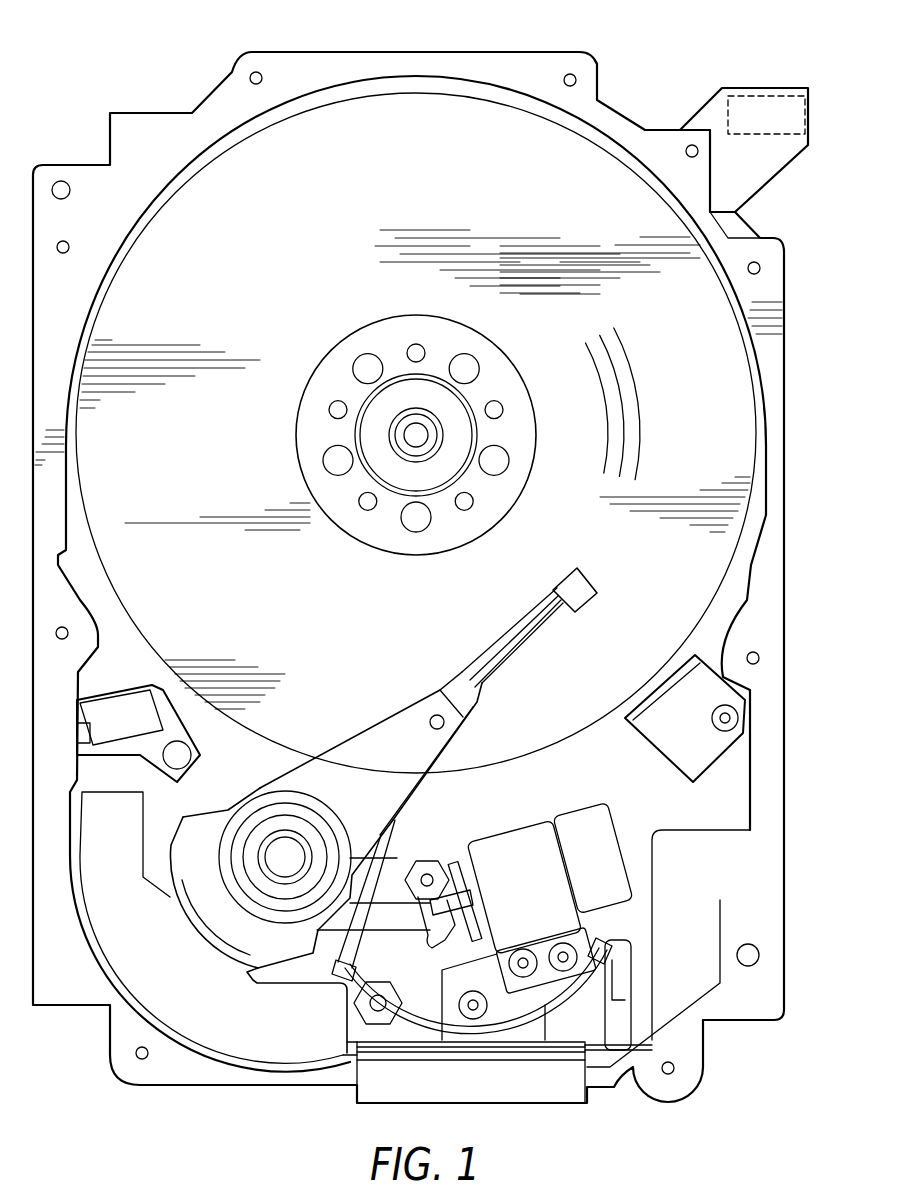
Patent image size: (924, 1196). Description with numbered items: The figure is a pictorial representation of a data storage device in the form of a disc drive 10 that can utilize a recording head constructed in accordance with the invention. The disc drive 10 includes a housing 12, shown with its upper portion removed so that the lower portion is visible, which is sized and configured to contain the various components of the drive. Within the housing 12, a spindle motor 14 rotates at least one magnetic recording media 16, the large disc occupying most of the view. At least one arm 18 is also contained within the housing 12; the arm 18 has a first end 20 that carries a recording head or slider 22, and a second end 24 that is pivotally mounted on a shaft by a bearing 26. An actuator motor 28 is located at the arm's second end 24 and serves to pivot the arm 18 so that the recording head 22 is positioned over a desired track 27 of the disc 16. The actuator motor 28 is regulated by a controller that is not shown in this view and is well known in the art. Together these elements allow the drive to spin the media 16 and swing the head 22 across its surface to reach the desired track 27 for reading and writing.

The disc drive 10 is at (88, 100).
The housing 12 is at (551, 68).
The spindle motor 14 is at (410, 437).
The magnetic recording media 16 is at (326, 226).
The arm 18 is at (400, 733).
The first end 20 is at (520, 620).
The recording head 22 is at (578, 585).
The second end 24 is at (310, 795).
The bearing 26 is at (277, 847).
The track 27 is at (628, 405).
The actuator motor 28 is at (176, 975).